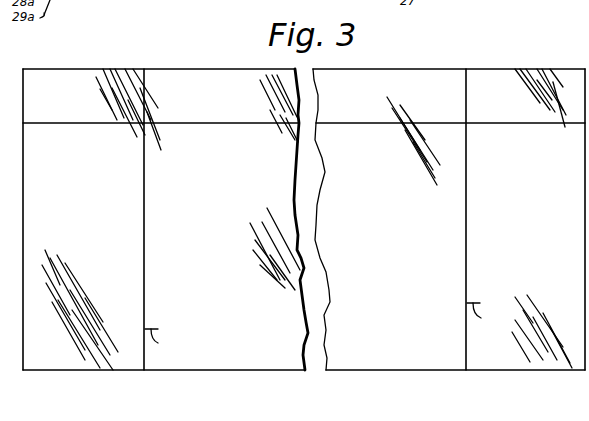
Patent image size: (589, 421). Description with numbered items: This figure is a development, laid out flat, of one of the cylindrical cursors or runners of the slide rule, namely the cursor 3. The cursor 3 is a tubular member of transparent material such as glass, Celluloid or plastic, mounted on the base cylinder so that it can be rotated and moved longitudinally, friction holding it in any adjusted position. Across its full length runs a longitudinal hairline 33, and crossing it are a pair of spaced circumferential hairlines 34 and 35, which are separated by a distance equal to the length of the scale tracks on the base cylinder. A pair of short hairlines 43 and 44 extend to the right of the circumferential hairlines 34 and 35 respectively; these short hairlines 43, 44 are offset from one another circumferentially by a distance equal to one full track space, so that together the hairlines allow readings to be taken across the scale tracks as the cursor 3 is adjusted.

The cursor 3 is at (23, 69).
The longitudinal hairline 33 is at (212, 123).
The circumferential hairline 34 is at (146, 223).
The circumferential hairline 35 is at (467, 210).
The short hairline 43 is at (161, 339).
The short hairline 44 is at (483, 316).